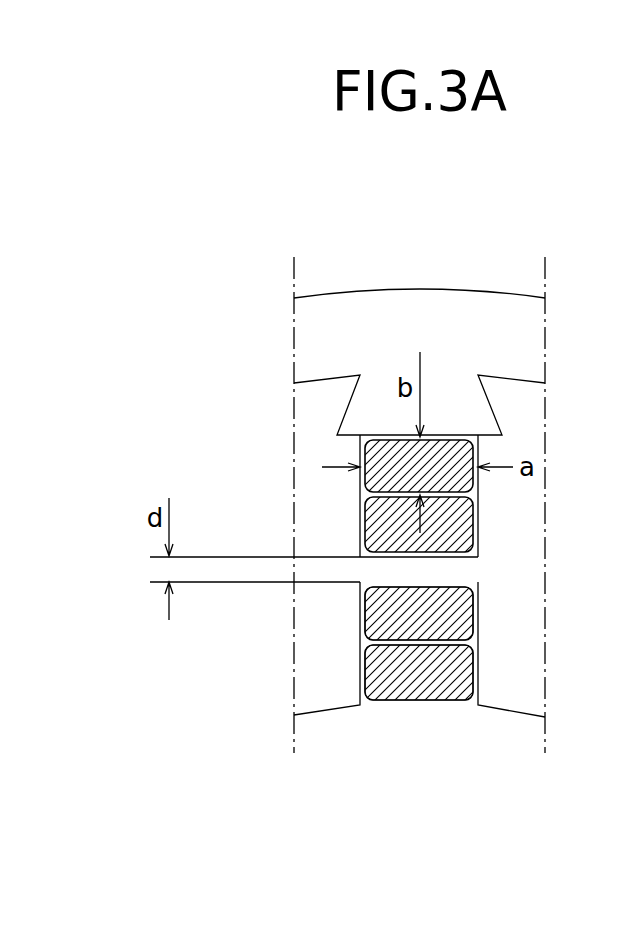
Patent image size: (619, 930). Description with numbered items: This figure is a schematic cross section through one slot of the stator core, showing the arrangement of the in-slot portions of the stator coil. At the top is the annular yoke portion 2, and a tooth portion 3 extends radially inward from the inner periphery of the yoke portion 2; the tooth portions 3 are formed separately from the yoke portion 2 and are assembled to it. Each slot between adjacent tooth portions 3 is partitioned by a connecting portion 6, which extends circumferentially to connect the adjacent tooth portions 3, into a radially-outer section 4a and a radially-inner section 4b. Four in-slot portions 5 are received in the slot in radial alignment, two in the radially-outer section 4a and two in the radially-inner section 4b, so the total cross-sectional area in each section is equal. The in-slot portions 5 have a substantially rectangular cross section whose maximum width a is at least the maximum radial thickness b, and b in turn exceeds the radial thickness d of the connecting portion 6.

The annular yoke portion 2 is at (323, 335).
The tooth portion 3 is at (510, 597).
The radially-outer section 4a is at (360, 495).
The radially-inner section 4b is at (360, 642).
The in-slot portion 5 is at (400, 617).
The connecting portion 6 is at (458, 570).